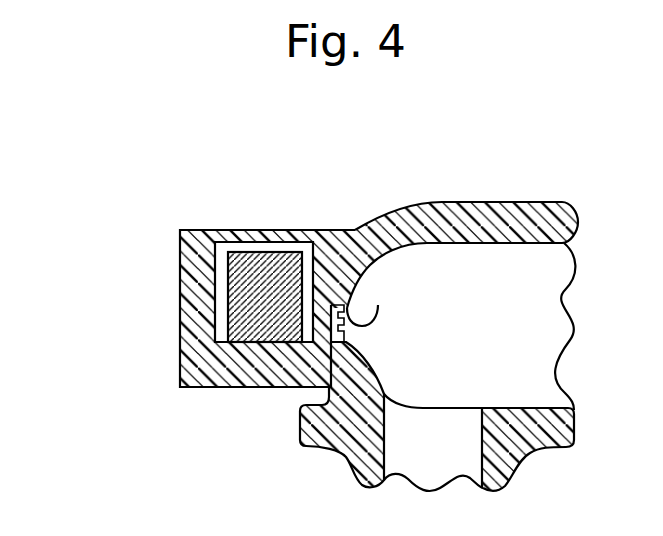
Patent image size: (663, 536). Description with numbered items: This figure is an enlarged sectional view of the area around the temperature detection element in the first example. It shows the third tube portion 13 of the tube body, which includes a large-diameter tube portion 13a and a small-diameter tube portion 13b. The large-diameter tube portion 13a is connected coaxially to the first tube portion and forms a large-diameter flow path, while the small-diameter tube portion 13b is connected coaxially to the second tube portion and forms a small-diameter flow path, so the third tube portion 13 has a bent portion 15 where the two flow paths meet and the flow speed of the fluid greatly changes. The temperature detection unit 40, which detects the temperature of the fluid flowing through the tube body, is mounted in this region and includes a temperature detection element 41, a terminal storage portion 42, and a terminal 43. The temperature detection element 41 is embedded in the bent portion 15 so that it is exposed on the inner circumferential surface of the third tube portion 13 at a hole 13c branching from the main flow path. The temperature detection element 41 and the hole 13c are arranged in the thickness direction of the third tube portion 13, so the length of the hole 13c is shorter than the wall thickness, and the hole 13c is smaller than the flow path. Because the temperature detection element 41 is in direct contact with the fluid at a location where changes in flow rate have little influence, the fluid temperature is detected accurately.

The third tube portion 13 is at (496, 198).
The large-diameter tube portion 13a is at (448, 218).
The small-diameter tube portion 13b is at (358, 442).
The hole 13c is at (378, 305).
The bent portion 15 is at (366, 220).
The temperature detection unit 40 is at (206, 311).
The temperature detection element 41 is at (333, 346).
The terminal storage portion 42 is at (197, 340).
The terminal 43 is at (258, 300).